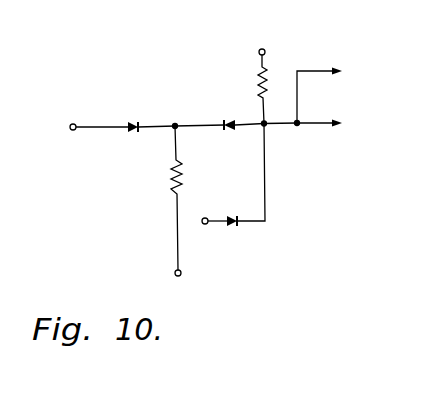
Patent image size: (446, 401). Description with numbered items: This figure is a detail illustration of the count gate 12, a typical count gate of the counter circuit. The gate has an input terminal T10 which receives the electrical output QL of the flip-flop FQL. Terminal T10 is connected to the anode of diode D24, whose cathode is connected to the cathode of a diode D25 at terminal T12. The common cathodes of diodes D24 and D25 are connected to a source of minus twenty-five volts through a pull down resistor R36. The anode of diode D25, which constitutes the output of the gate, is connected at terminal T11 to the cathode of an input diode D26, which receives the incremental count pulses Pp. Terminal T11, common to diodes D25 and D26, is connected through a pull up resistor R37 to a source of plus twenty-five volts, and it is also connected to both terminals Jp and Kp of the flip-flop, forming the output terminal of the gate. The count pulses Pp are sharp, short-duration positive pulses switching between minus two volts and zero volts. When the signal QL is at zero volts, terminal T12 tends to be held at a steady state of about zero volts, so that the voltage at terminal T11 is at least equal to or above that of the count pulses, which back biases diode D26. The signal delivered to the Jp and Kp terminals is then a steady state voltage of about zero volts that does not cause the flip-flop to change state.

The count gate 12 is at (195, 82).
The input terminal T10 is at (84, 116).
The diode D24 is at (147, 117).
The terminal T12 is at (197, 115).
The diode D25 is at (240, 114).
The output terminal T11 is at (265, 125).
The pull up resistor R37 is at (250, 76).
The pull down resistor R36 is at (167, 213).
The input diode D26 is at (231, 189).